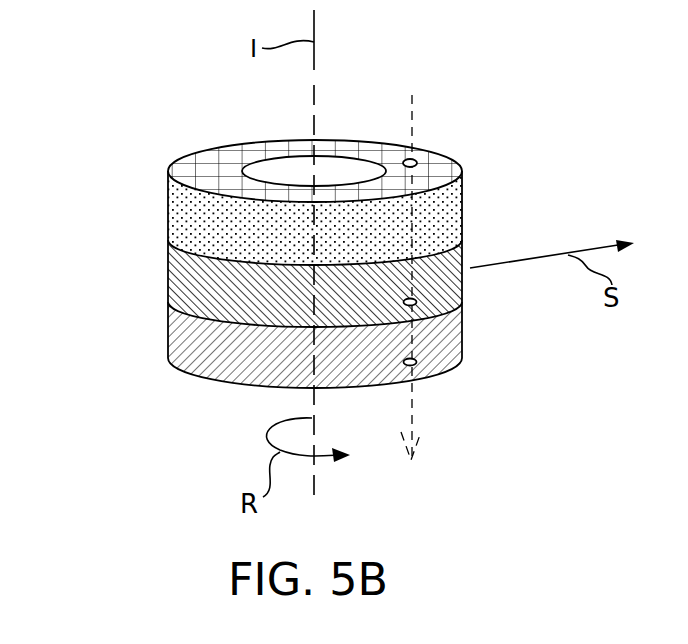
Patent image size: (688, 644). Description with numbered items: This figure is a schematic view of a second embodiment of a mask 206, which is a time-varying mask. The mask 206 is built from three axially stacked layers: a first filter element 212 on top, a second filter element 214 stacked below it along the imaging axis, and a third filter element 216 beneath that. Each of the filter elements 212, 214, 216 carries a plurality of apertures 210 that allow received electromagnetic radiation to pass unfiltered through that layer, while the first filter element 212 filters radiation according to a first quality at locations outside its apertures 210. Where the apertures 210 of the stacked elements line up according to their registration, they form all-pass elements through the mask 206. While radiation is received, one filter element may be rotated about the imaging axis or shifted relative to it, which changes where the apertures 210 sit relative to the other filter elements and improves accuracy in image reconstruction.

The mask 206 is at (128, 408).
The apertures 210 is at (417, 161).
The first filter element 212 is at (178, 210).
The second filter element 214 is at (178, 280).
The third filter element 216 is at (188, 336).